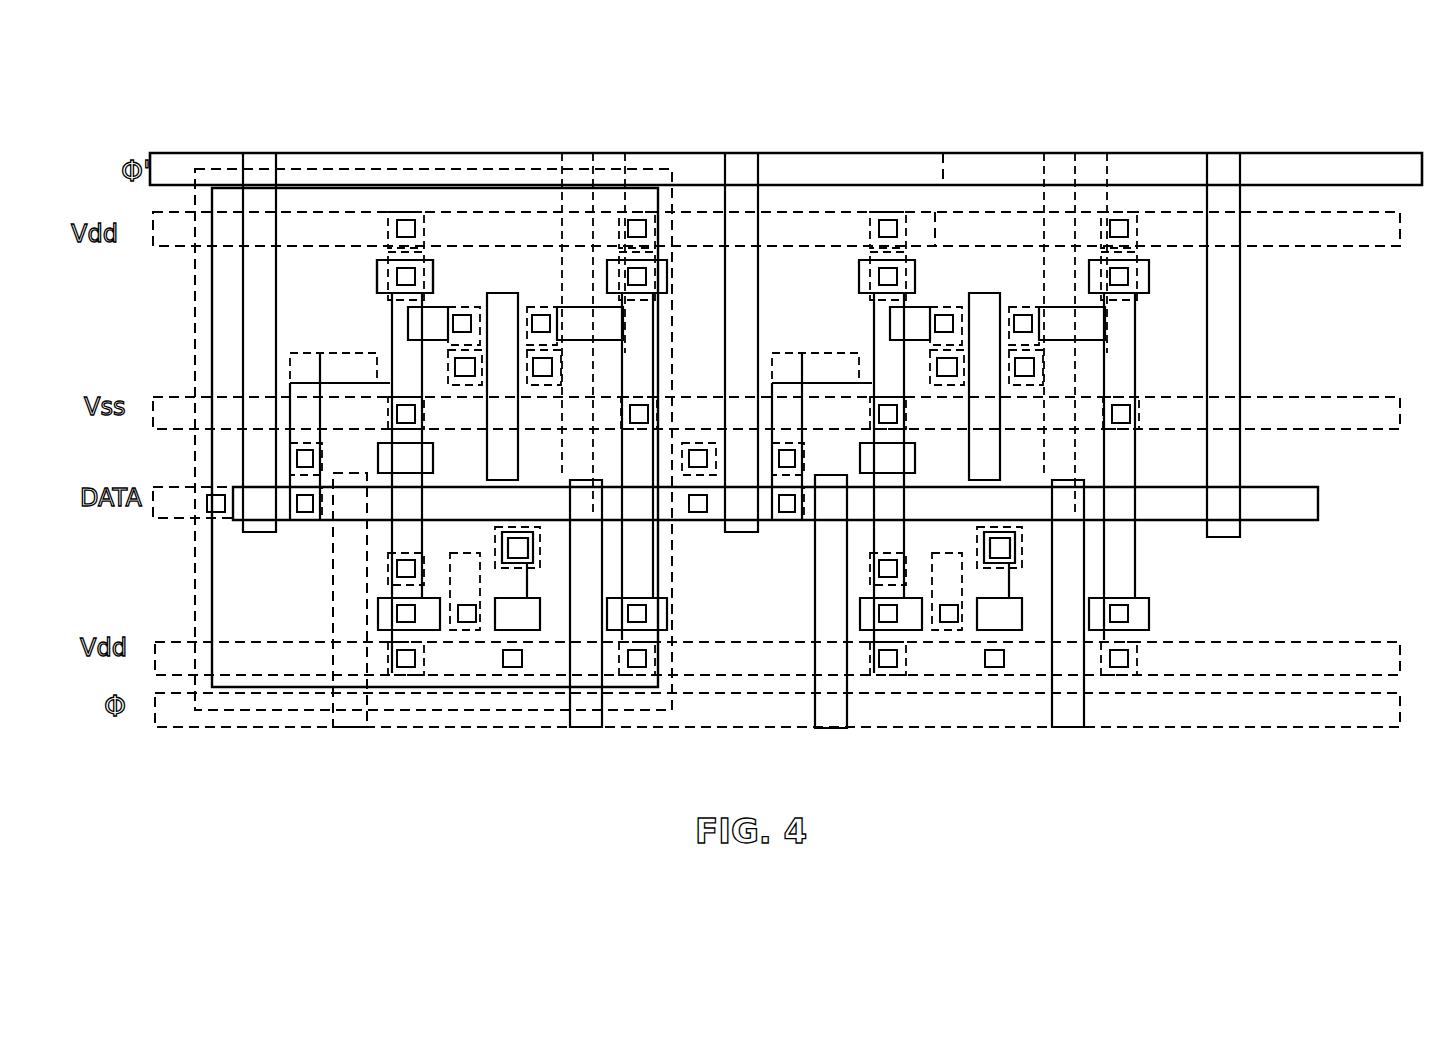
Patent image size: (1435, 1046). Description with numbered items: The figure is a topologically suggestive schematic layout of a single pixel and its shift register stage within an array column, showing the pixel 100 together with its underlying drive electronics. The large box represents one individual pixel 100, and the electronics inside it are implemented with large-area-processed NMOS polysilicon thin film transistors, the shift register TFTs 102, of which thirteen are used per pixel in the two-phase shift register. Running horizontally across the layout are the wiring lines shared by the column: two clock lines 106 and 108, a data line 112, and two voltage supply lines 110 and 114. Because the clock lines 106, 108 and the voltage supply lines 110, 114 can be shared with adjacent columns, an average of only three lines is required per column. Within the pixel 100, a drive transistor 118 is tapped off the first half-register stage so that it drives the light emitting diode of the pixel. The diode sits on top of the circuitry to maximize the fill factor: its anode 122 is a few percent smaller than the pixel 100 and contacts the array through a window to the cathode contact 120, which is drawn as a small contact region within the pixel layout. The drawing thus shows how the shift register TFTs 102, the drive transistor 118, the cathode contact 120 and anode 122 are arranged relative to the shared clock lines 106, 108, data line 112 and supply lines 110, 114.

The pixel 100 is at (371, 453).
The shift register TFT 102 is at (424, 250).
The clock line 106 is at (785, 172).
The clock line 108 is at (748, 710).
The voltage supply line 110 is at (975, 235).
The data line 112 is at (177, 508).
The voltage supply line 114 is at (1333, 415).
The drive transistor 118 is at (507, 612).
The cathode contact 120 is at (533, 563).
The anode 122 is at (253, 687).